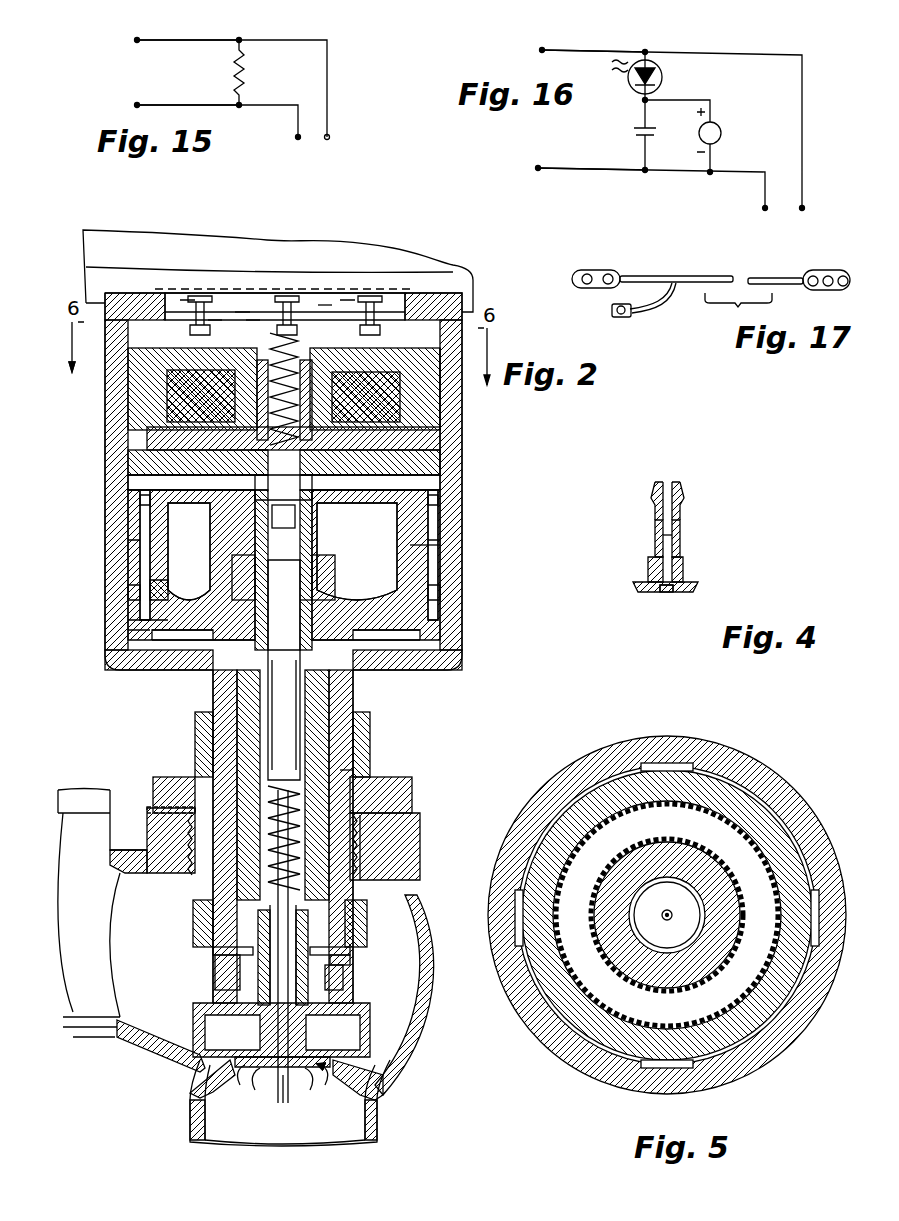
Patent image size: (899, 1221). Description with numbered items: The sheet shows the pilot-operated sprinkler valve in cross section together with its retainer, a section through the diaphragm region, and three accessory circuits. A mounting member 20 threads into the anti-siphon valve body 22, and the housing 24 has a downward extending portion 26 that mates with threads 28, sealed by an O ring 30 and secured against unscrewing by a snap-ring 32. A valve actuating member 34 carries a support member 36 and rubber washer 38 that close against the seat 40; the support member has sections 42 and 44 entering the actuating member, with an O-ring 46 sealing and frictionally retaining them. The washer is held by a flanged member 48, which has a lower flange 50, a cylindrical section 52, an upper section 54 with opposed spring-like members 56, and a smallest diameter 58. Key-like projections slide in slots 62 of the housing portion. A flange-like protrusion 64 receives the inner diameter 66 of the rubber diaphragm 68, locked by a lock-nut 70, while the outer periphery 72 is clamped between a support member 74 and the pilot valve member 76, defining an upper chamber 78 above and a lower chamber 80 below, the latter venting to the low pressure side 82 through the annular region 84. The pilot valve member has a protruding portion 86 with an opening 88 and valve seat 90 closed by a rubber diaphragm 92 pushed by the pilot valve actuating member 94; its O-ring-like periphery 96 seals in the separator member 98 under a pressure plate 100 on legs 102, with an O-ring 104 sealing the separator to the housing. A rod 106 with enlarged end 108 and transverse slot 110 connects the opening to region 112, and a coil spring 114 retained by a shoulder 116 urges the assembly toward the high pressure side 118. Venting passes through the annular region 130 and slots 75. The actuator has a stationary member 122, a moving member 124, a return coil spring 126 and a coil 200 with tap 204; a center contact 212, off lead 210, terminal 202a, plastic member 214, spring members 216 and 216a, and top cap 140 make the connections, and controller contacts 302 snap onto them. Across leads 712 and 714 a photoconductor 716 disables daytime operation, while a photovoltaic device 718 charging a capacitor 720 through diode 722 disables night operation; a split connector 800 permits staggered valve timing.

In FIG. 15, the probe lead 712 is at (216, 40).
In FIG. 16, the probe lead 712 is at (548, 168).
In FIG. 15, the probe lead 714 is at (160, 105).
In FIG. 16, the probe lead 714 is at (668, 52).
In FIG. 15, the photoconductor 716 is at (236, 70).
In FIG. 16, the photovoltaic device 718 is at (721, 138).
In FIG. 16, the capacitor 720 is at (640, 132).
In FIG. 16, the diode 722 is at (662, 76).
In FIG. 17, the split connector 800 is at (675, 302).
In FIG. 4, the flanged member 48 is at (682, 556).
In FIG. 2, the flanged member 48 is at (270, 1075).
In FIG. 4, the lower flange 50 is at (693, 589).
In FIG. 4, the cylindrical section 52 is at (683, 566).
In FIG. 4, the upward extending section 54 is at (683, 535).
In FIG. 4, the spring-like members 56 is at (655, 490).
In FIG. 4, the smallest diameter 58 is at (655, 592).
In FIG. 2, the mounting member 20 is at (398, 778).
In FIG. 2, the anti-siphon valve body 22 is at (408, 820).
In FIG. 5, the housing 24 is at (560, 790).
In FIG. 2, the housing 24 is at (450, 568).
In FIG. 2, the downward extending portion 26 is at (345, 703).
In FIG. 2, the threads 28 is at (350, 912).
In FIG. 2, the O ring 30 is at (348, 772).
In FIG. 2, the snap-ring 32 is at (345, 968).
In FIG. 5, the valve actuating member 34 is at (700, 855).
In FIG. 2, the valve actuating member 34 is at (243, 775).
In FIG. 2, the support member 36 is at (345, 1003).
In FIG. 2, the rubber washer 38 is at (350, 1055).
In FIG. 2, the valve seat 40 is at (375, 1106).
In FIG. 2, the upward extending section 42 is at (330, 1000).
In FIG. 2, the further upward extending section 44 is at (340, 958).
In FIG. 2, the O-ring 46 is at (245, 978).
In FIG. 2, the slots 62 is at (225, 718).
In FIG. 2, the flange-like protrusion 64 is at (160, 620).
In FIG. 2, the inner diameter 66 is at (195, 570).
In FIG. 5, the rubber diaphragm 68 is at (585, 905).
In FIG. 2, the rubber diaphragm 68 is at (160, 588).
In FIG. 2, the lock-nut 70 is at (370, 556).
In FIG. 2, the outer periphery of the diaphragm 72 is at (435, 550).
In FIG. 5, the support member 74 is at (545, 965).
In FIG. 2, the support member 74 is at (140, 590).
In FIG. 2, the slots 75 is at (125, 548).
In FIG. 2, the pilot valve member 76 is at (410, 440).
In FIG. 2, the upper chamber 78 is at (130, 520).
In FIG. 2, the lower chamber 80 is at (185, 640).
In FIG. 2, the low pressure side 82 is at (140, 990).
In FIG. 2, the annular region 84 is at (200, 803).
In FIG. 5, the downward protruding portion 86 is at (645, 905).
In FIG. 2, the downward protruding portion 86 is at (236, 579).
In FIG. 5, the opening 88 is at (672, 915).
In FIG. 2, the opening 88 is at (284, 605).
In FIG. 2, the valve seat 90 is at (333, 577).
In FIG. 2, the rubber diaphragm 92 is at (250, 500).
In FIG. 2, the pilot valve actuating member 94 is at (284, 517).
In FIG. 2, the O-ring-like periphery 96 is at (370, 466).
In FIG. 2, the separator member 98 is at (450, 455).
In FIG. 2, the pressure plate 100 is at (246, 462).
In FIG. 2, the legs 102 is at (198, 463).
In FIG. 2, the O-ring 104 is at (440, 478).
In FIG. 2, the rod 106 is at (265, 1115).
In FIG. 2, the enlarged end 108 is at (332, 642).
In FIG. 2, the transverse slot 110 is at (326, 612).
In FIG. 2, the region 112 is at (238, 642).
In FIG. 2, the coil spring 114 is at (303, 823).
In FIG. 2, the inward projecting shoulder 116 is at (240, 898).
In FIG. 2, the high pressure side 118 is at (325, 1135).
In FIG. 2, the stationary magnetic member 122 is at (150, 378).
In FIG. 2, the moving magnetic member 124 is at (440, 420).
In FIG. 2, the coil spring 126 is at (253, 320).
In FIG. 5, the annular region 130 is at (680, 765).
In FIG. 2, the annular region 130 is at (130, 503).
In FIG. 2, the top cap 140 is at (465, 300).
In FIG. 2, the magnetizing coil 200 is at (175, 395).
In FIG. 2, the electrical connection 202a is at (195, 300).
In FIG. 2, the tap 204 is at (285, 305).
In FIG. 2, the off input lead 210 is at (310, 309).
In FIG. 2, the center contact 212 is at (325, 305).
In FIG. 2, the plastic member 214 is at (215, 320).
In FIG. 2, the metal spring member 216 is at (185, 300).
In FIG. 2, the spring clip 216a is at (240, 315).
In FIG. 2, the contacts 302 is at (380, 300).